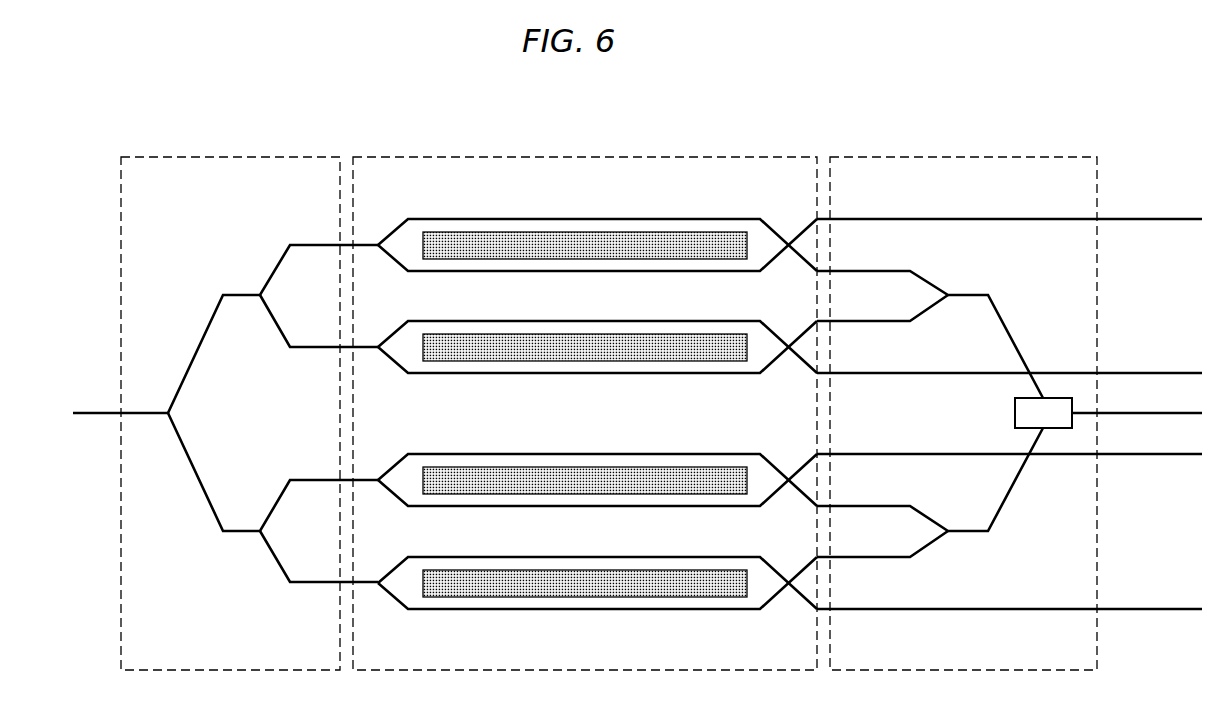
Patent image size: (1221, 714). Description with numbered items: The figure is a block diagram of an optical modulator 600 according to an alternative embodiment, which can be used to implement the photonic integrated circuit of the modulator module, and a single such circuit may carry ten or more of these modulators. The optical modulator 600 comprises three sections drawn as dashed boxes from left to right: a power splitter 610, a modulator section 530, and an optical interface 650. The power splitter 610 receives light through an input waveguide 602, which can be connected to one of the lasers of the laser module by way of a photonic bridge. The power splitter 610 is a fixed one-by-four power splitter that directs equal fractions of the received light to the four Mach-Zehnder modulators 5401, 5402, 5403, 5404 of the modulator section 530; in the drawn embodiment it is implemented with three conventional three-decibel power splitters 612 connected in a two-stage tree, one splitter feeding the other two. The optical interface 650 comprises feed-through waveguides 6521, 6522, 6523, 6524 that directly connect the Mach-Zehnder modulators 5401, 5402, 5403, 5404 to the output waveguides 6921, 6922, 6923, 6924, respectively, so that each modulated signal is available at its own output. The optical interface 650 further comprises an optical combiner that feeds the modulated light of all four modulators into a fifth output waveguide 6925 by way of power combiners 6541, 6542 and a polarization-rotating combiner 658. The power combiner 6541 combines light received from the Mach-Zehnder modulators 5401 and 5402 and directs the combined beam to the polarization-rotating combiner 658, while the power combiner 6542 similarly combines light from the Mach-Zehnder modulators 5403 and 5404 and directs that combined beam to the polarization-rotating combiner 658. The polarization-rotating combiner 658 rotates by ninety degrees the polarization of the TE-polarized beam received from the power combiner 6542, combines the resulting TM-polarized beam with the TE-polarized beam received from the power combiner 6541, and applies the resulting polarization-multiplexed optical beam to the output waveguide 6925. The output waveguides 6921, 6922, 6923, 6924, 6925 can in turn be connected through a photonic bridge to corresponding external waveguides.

The optical modulator 600 is at (598, 91).
The input waveguide 602 is at (95, 414).
The power splitter 610 is at (260, 157).
The 3-dB power splitter 612 is at (253, 286).
The modulator section 530 is at (742, 157).
The Mach-Zehnder modulator 5401 is at (533, 219).
The Mach-Zehnder modulator 5402 is at (533, 321).
The Mach-Zehnder modulator 5403 is at (533, 454).
The Mach-Zehnder modulator 5404 is at (533, 557).
The optical interface 650 is at (1015, 157).
The feed-through waveguide 6521 is at (950, 219).
The feed-through waveguide 6522 is at (925, 374).
The feed-through waveguide 6523 is at (925, 453).
The feed-through waveguide 6524 is at (950, 610).
The power combiner 6541 is at (956, 291).
The power combiner 6542 is at (956, 537).
The polarization-rotating combiner 658 is at (1014, 412).
The output waveguide 6921 is at (1127, 219).
The output waveguide 6922 is at (1127, 373).
The output waveguide 6923 is at (1127, 455).
The output waveguide 6924 is at (1127, 610).
The output waveguide 6925 is at (1127, 413).